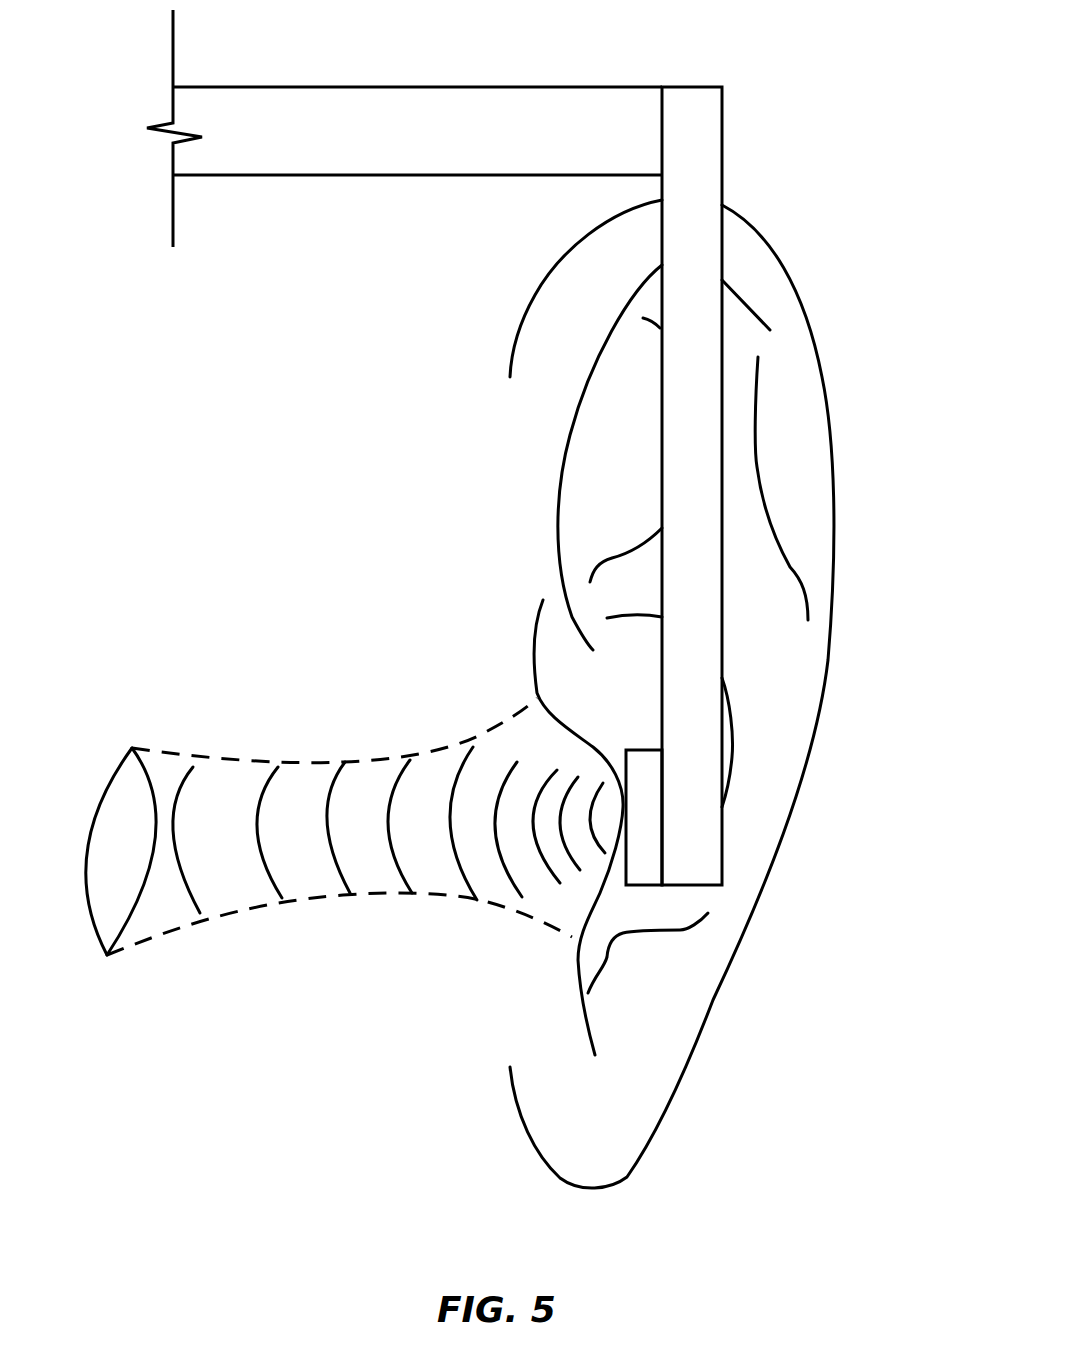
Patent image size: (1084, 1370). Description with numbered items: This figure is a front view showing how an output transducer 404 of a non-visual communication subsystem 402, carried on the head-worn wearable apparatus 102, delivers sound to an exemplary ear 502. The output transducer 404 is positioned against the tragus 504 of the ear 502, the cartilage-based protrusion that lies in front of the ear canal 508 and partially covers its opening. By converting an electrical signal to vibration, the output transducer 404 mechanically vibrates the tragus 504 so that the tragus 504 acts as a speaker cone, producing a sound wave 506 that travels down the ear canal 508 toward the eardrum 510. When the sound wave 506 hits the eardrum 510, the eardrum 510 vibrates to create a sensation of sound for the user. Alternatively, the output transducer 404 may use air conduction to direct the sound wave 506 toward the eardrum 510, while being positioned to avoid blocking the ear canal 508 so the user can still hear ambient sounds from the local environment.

The wearable apparatus 102 is at (349, 175).
The non-visual communication subsystem 402 is at (722, 178).
The output transducer 404 is at (663, 840).
The ear 502 is at (823, 382).
The tragus 504 is at (607, 893).
The sound wave 506 is at (458, 760).
The ear canal 508 is at (330, 897).
The eardrum 510 is at (127, 753).